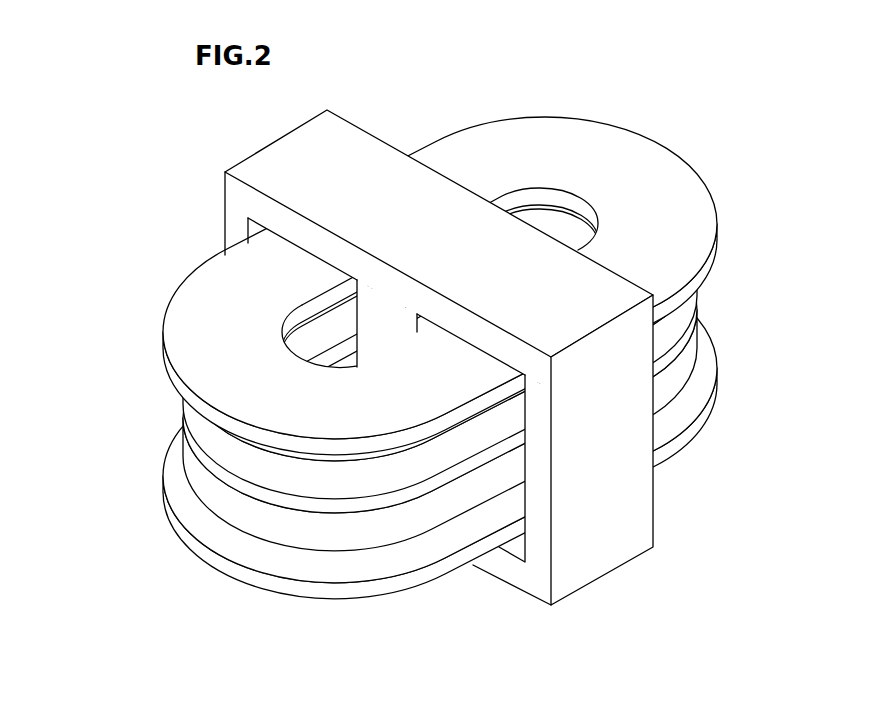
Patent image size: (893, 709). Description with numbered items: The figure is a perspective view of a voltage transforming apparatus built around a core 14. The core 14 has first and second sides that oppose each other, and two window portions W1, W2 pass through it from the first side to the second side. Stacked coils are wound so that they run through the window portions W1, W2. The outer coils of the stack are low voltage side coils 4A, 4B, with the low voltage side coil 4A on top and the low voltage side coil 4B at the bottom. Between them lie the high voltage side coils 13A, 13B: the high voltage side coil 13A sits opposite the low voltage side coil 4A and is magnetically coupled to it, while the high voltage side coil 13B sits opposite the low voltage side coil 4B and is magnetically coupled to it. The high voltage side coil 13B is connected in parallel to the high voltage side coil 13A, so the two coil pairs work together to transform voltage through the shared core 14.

The core 14 is at (352, 150).
The low voltage side coil 4A is at (205, 367).
The low voltage side coil 4B is at (208, 532).
The high voltage side coil 13A is at (217, 443).
The high voltage side coil 13B is at (217, 497).
The window portion W1 is at (246, 239).
The window portion W2 is at (520, 545).